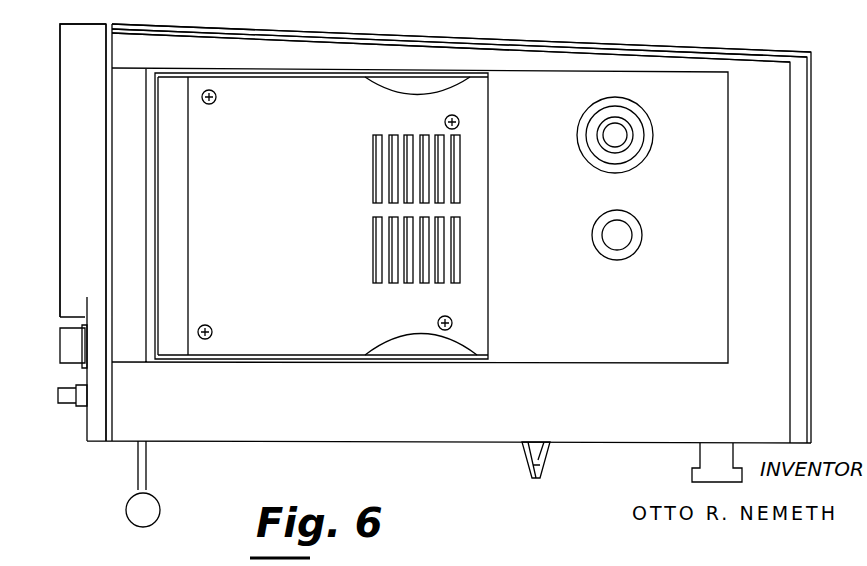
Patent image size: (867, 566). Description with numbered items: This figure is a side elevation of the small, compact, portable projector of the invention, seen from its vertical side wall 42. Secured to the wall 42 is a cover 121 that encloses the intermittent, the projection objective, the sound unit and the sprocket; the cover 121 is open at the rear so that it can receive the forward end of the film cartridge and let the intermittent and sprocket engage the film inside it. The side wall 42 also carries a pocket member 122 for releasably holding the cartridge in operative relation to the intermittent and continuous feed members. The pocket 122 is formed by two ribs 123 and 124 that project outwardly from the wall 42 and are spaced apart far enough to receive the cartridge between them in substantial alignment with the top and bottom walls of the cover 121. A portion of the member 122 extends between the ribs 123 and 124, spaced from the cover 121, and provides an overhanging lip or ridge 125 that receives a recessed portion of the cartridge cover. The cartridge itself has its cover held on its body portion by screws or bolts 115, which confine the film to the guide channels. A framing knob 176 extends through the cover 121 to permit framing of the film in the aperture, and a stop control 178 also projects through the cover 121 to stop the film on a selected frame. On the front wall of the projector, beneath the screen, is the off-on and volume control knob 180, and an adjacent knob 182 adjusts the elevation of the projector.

The side wall 42 is at (772, 251).
The screws or bolts 115 is at (216, 101).
The cover 121 is at (707, 157).
The pocket member 122 is at (222, 375).
The rib 123 is at (303, 70).
The rib 124 is at (312, 361).
The overhanging lip or ridge 125 is at (143, 232).
The framing knob 176 is at (633, 250).
The stop control 178 is at (652, 140).
The off-on and volume control knob 180 is at (60, 398).
The knob 182 is at (60, 358).